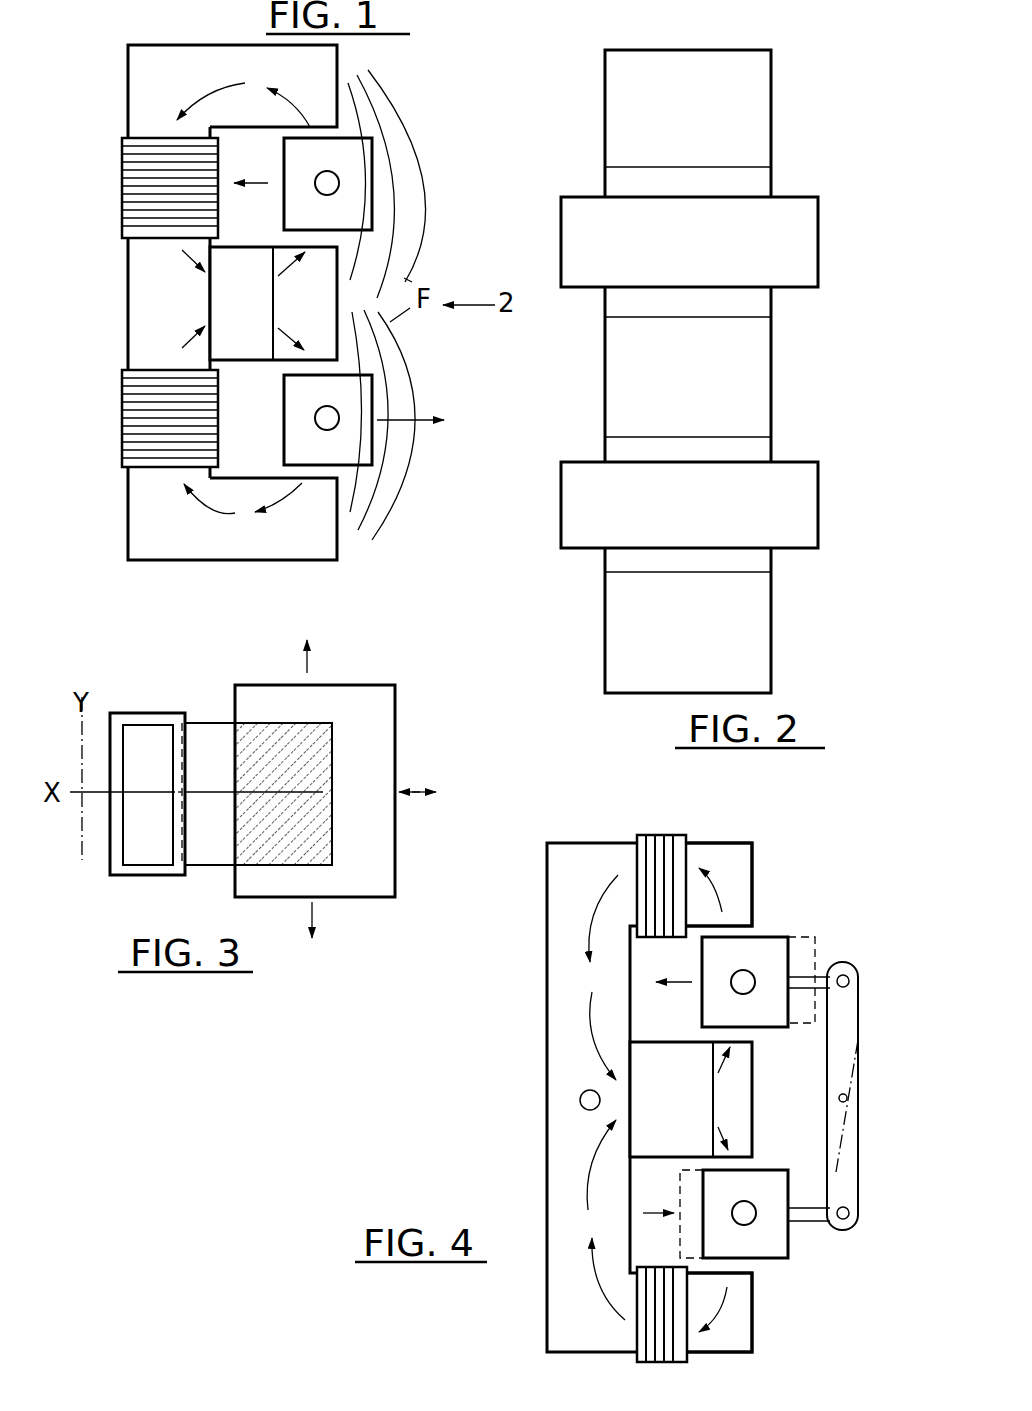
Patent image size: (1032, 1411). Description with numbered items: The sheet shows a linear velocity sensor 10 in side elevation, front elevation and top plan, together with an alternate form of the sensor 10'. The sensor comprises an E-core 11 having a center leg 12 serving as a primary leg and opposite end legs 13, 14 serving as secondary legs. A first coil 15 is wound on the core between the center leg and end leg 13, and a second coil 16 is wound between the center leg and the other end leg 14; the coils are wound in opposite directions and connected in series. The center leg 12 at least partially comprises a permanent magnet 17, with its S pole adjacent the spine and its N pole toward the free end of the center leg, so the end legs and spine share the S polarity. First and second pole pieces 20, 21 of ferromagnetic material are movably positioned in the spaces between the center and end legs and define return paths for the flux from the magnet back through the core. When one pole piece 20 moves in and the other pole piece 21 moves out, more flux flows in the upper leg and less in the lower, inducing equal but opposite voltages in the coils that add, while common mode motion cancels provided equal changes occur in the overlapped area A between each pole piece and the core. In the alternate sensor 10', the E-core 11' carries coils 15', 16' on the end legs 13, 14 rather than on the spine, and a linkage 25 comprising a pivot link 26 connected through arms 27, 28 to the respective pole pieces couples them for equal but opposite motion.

In FIG. 1, the linear velocity sensor 10 is at (199, 304).
In FIG. 1, the E-core 11 is at (208, 304).
In FIG. 2, the E-core 11 is at (696, 373).
In FIG. 1, the center leg 12 is at (256, 362).
In FIG. 2, the center leg 12 is at (745, 372).
In FIG. 1, the end leg 13 is at (226, 45).
In FIG. 2, the end leg 13 is at (755, 118).
In FIG. 3, the end leg 13 is at (306, 722).
In FIG. 4, the end leg 13 is at (708, 842).
In FIG. 1, the end leg 14 is at (224, 562).
In FIG. 2, the end leg 14 is at (742, 648).
In FIG. 4, the end leg 14 is at (752, 1320).
In FIG. 1, the first coil 15 is at (143, 188).
In FIG. 3, the first coil 15 is at (147, 769).
In FIG. 1, the second coil 16 is at (140, 418).
In FIG. 1, the permanent magnet 17 is at (255, 282).
In FIG. 4, the permanent magnet 17 is at (682, 1076).
In FIG. 1, the first pole piece 20 is at (370, 163).
In FIG. 2, the first pole piece 20 is at (796, 197).
In FIG. 3, the first pole piece 20 is at (378, 738).
In FIG. 4, the first pole piece 20 is at (770, 937).
In FIG. 1, the second pole piece 21 is at (348, 443).
In FIG. 2, the second pole piece 21 is at (796, 462).
In FIG. 4, the second pole piece 21 is at (766, 1245).
In FIG. 4, the linkage 25 is at (828, 942).
In FIG. 4, the pivot link 26 is at (854, 1102).
In FIG. 4, the arm 27 is at (808, 990).
In FIG. 4, the arm 28 is at (808, 1206).
In FIG. 3, the overlapped area A is at (258, 755).
In FIG. 4, the linear velocity sensor 10' is at (638, 1071).
In FIG. 4, the E-core 11' is at (657, 1071).
In FIG. 4, the first coil 15' is at (641, 856).
In FIG. 4, the second coil 16' is at (579, 1314).